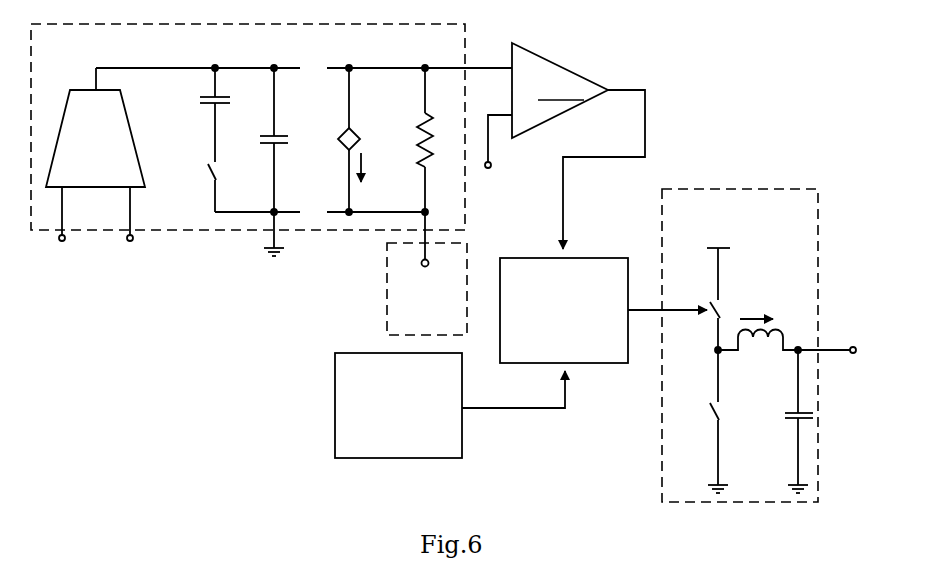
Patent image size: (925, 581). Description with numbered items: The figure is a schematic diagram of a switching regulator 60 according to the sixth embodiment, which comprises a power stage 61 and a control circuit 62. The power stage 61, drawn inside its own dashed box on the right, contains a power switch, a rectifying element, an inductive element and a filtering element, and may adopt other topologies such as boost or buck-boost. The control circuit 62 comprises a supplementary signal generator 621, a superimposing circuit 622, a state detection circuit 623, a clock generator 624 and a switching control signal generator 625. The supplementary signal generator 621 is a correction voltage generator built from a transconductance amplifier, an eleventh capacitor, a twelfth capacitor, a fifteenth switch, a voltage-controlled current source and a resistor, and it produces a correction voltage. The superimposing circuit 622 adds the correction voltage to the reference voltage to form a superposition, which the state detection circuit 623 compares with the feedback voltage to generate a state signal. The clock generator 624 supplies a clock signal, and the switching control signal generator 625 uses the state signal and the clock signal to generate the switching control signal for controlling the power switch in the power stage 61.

The switching regulator 60 is at (756, 53).
The power stage 61 is at (781, 188).
The control circuit 62 is at (643, 68).
The supplementary signal generator 621 is at (183, 231).
The superimposing circuit 622 is at (458, 330).
The state detection circuit 623 is at (571, 70).
The clock generator 624 is at (417, 416).
The switching control signal generator 625 is at (582, 321).